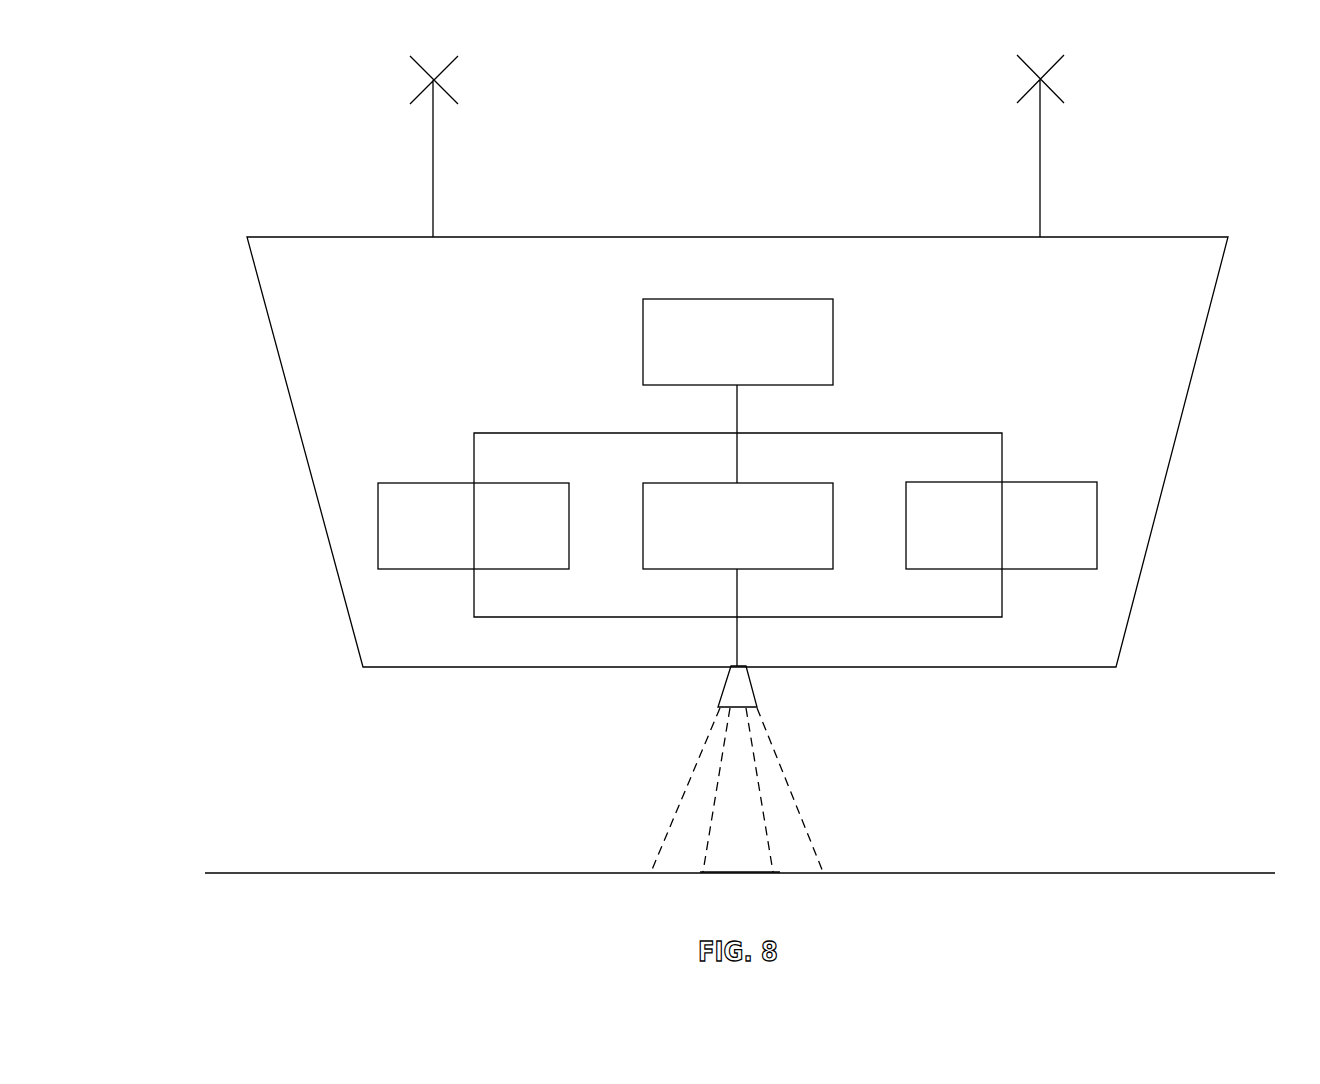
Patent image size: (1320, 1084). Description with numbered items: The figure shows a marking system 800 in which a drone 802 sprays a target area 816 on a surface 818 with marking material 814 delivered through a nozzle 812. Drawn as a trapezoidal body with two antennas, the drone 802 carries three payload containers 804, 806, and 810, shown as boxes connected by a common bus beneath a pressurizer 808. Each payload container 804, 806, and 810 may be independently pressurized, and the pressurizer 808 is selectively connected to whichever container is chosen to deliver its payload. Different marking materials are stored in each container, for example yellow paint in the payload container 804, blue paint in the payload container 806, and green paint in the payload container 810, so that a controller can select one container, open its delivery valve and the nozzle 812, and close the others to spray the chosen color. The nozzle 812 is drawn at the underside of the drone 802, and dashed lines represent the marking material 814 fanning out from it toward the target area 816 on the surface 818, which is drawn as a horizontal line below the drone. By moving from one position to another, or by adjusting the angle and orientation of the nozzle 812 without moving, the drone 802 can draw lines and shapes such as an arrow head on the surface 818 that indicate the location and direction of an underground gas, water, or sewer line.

The marking system 800 is at (214, 68).
The drone 802 is at (313, 237).
The payload container 804 is at (447, 483).
The payload container 806 is at (710, 483).
The pressurizer 808 is at (710, 299).
The payload container 810 is at (975, 482).
The nozzle 812 is at (756, 696).
The marking material 814 is at (786, 778).
The target area 816 is at (726, 890).
The surface 818 is at (1032, 873).